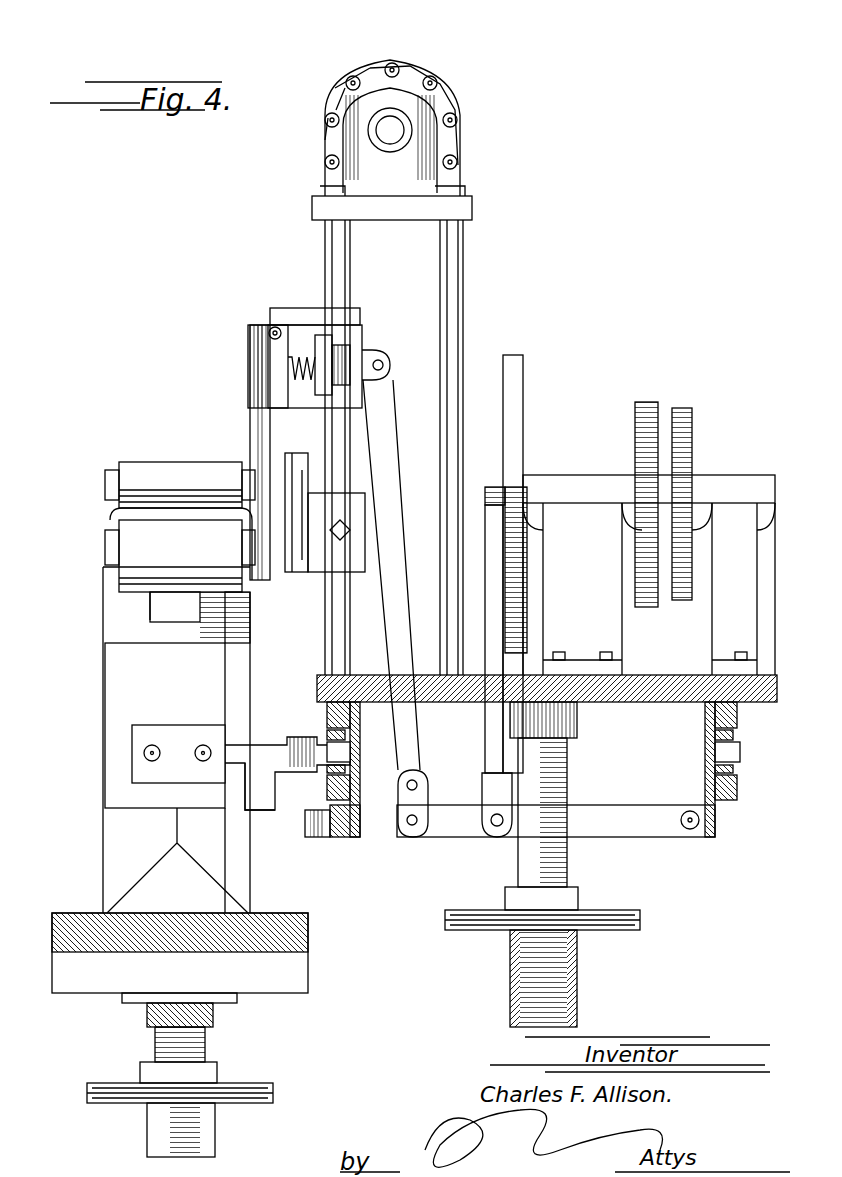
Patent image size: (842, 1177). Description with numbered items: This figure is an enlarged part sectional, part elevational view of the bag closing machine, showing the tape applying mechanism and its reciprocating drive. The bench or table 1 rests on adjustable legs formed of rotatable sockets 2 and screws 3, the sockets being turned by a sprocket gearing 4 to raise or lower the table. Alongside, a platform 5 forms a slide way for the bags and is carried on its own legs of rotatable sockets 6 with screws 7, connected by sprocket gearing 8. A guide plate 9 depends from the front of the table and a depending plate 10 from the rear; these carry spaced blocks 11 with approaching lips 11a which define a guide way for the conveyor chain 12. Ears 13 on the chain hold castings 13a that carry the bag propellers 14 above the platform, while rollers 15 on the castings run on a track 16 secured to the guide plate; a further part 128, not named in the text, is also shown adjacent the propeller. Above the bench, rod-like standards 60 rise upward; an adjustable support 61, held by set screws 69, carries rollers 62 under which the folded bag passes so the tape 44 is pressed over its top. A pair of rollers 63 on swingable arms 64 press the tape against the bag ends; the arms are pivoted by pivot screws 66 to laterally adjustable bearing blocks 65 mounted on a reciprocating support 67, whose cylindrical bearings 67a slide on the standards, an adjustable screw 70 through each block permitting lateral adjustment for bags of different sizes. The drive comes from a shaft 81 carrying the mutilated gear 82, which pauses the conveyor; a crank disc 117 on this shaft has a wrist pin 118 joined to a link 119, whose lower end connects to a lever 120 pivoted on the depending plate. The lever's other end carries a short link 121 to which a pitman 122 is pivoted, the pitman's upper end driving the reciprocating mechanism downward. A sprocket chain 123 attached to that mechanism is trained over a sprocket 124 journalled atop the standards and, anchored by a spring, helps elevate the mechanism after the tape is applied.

The bench or table 1 is at (680, 686).
The rotatable sockets 2 is at (577, 965).
The screws 3 is at (567, 866).
The sprocket gearing 4 is at (620, 910).
The platform 5 is at (308, 935).
The rotatable sockets 6 is at (215, 1132).
The screws 7 is at (205, 1052).
The sprocket gearing 8 is at (275, 1090).
The guide plate 9 is at (362, 760).
The depending plate 10 is at (707, 748).
The spaced blocks 11 is at (327, 712).
The approaching lips 11a is at (327, 735).
The conveyor chain 12 is at (350, 745).
The ears 13 is at (290, 748).
The castings 13a is at (278, 805).
The bag propellers 14 is at (120, 695).
The rollers 15 is at (315, 838).
The track 16 is at (345, 840).
The tape 44 is at (175, 600).
The rod-like standards 60 is at (345, 265).
The adjustable support 61 is at (292, 560).
The rollers 62 is at (158, 470).
The rollers 63 is at (135, 538).
The swingable arms 64 is at (258, 412).
The bearing blocks 65 is at (283, 395).
The pivot screws 66 is at (248, 358).
The reciprocating support 67 is at (310, 393).
The cylindrical bearings 67a is at (350, 345).
The set screws 69 is at (335, 540).
The adjustable screw 70 is at (275, 327).
The shaft 81 is at (500, 485).
The mutilated gear 82 is at (645, 405).
The crank disc 117 is at (515, 372).
The wrist pin 118 is at (490, 505).
The link 119 is at (495, 580).
The lever 120 is at (580, 815).
The short link 121 is at (418, 805).
The pitman 122 is at (388, 422).
The sprocket chain 123 is at (335, 85).
The sprocket 124 is at (375, 60).
The column 128 is at (240, 685).